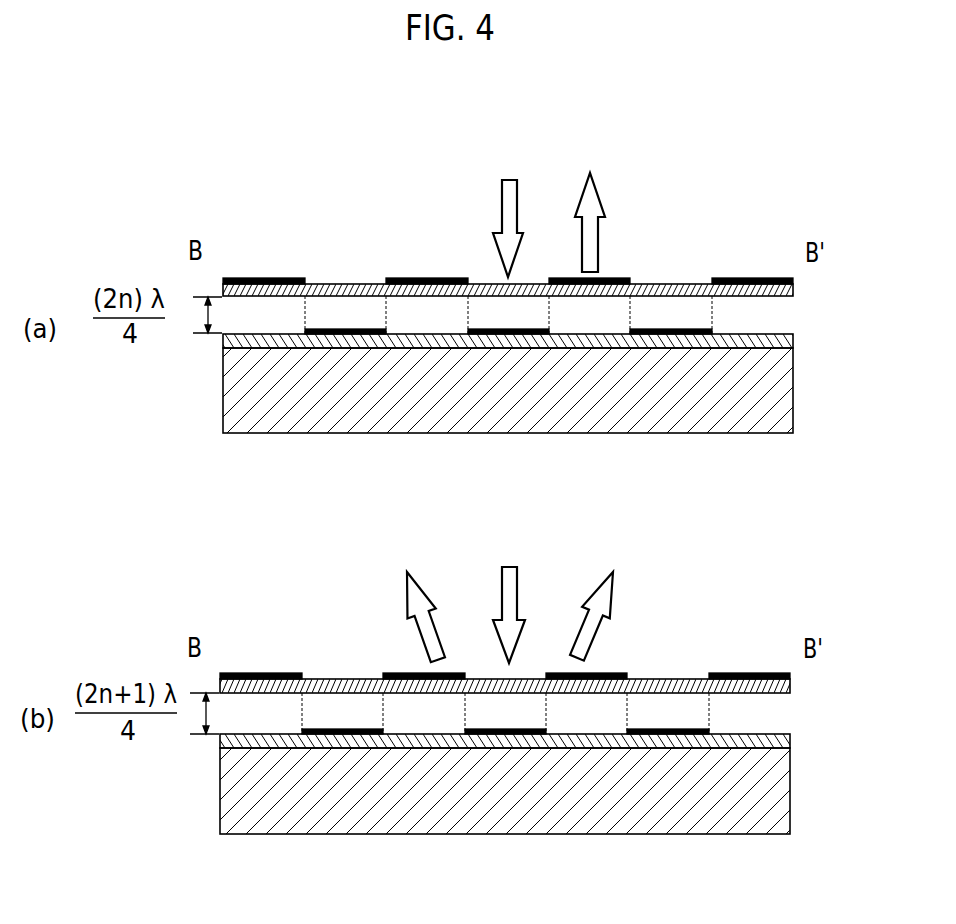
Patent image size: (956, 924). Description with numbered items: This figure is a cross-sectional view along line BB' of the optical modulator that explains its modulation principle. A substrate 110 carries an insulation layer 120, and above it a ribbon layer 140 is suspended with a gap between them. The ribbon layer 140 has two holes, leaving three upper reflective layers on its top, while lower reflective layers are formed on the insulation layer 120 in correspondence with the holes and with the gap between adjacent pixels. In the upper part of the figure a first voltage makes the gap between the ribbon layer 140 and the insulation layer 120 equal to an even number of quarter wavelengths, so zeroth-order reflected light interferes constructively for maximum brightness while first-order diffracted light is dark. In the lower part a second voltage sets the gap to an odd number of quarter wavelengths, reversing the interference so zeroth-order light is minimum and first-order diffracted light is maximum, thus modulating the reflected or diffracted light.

The substrate 110 is at (793, 398).
The insulation layer 120 is at (793, 343).
The ribbon layer 140 is at (793, 291).